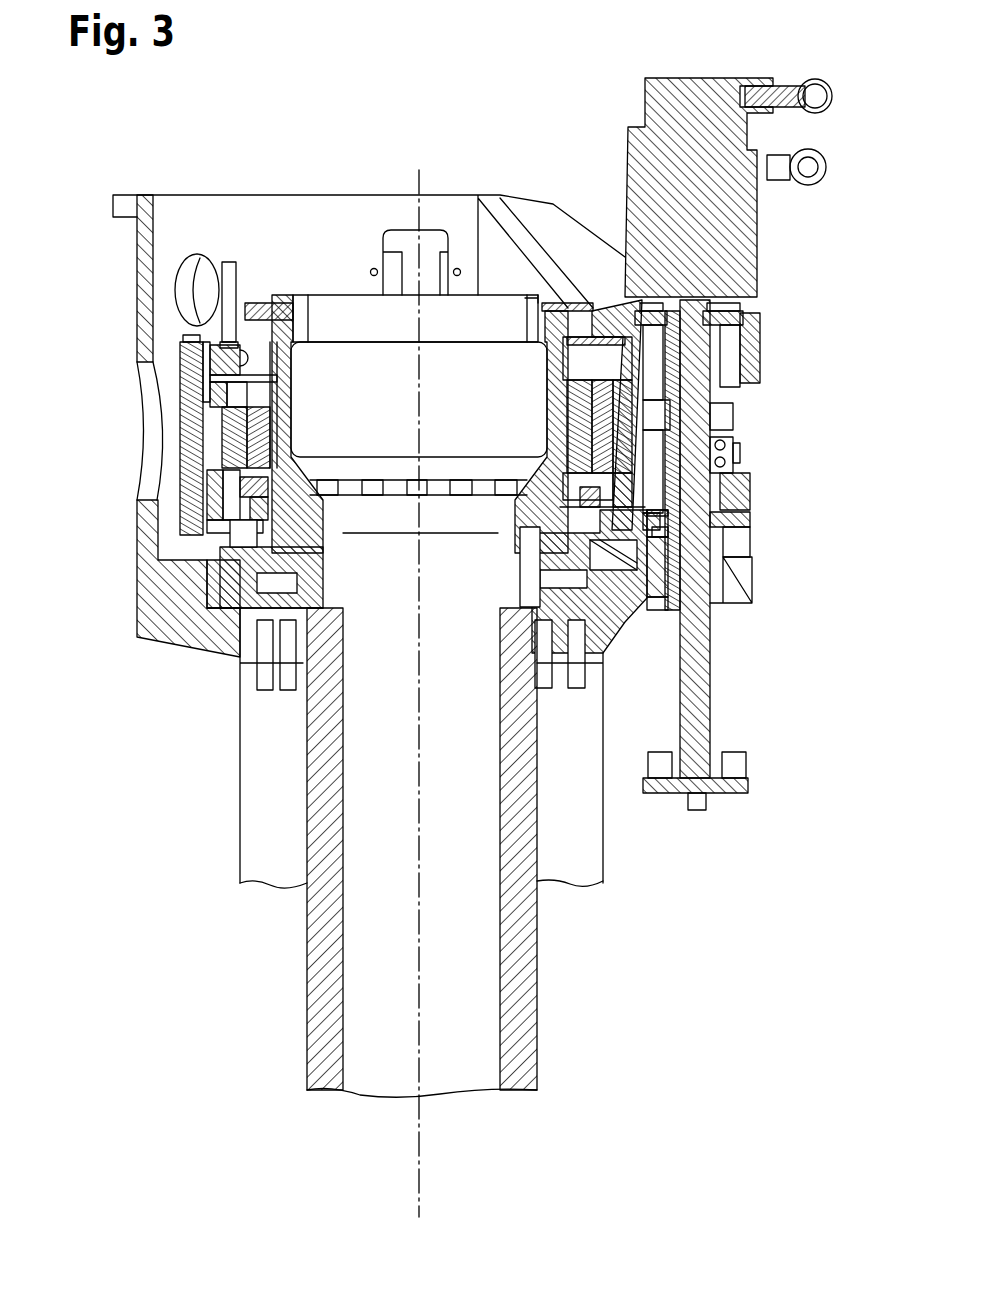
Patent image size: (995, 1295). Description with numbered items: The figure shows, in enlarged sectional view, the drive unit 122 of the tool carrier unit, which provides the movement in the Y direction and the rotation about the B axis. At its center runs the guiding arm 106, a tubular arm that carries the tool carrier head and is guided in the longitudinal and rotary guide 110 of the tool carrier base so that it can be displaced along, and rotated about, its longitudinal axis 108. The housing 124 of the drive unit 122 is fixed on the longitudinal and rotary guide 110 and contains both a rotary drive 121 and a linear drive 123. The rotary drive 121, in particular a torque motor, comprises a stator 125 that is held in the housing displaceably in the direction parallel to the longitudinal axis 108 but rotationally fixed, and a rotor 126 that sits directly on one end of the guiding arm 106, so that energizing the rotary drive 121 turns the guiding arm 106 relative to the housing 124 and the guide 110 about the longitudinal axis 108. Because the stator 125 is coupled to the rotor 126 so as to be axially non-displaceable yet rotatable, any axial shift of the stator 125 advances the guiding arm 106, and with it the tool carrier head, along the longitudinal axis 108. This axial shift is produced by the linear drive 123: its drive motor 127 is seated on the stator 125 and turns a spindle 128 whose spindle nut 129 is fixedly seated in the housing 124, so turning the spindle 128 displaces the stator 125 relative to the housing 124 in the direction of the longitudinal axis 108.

The guiding arm 106 is at (520, 1020).
The longitudinal axis 108 is at (425, 1186).
The longitudinal and rotary guide 110 is at (262, 822).
The rotary drive 121 is at (473, 369).
The drive unit 122 is at (150, 658).
The linear drive 123 is at (738, 417).
The housing 124 is at (735, 591).
The stator 125 is at (215, 438).
The rotor 126 is at (283, 413).
The drive motor 127 is at (742, 255).
The spindle 128 is at (702, 704).
The spindle nut 129 is at (722, 568).